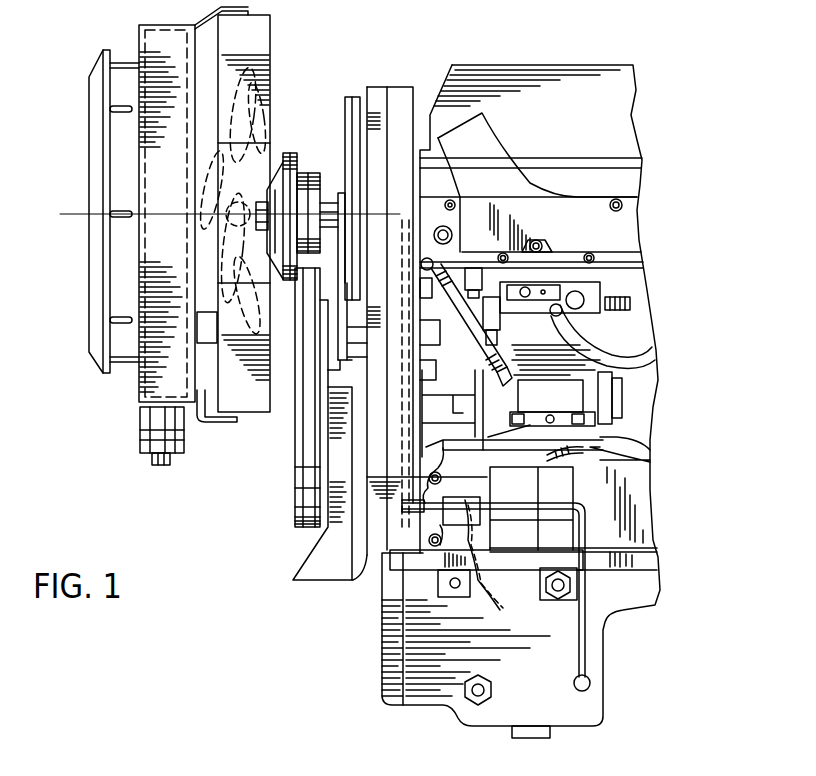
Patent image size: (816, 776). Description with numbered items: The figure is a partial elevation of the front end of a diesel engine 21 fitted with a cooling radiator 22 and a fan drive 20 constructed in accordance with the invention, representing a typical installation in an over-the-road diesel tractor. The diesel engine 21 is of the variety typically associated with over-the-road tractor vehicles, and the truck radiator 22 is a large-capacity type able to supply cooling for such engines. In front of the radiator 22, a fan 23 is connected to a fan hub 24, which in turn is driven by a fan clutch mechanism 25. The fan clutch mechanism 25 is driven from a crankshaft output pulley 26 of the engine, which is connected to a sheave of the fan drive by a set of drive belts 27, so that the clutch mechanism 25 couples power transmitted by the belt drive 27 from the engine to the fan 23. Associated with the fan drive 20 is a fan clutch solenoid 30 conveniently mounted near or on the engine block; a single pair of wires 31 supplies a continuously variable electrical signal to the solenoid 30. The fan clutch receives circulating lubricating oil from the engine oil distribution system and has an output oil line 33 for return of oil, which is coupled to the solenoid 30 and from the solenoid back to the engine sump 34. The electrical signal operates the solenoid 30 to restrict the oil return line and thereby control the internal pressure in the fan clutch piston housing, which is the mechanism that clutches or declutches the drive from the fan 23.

The fan drive 20 is at (323, 72).
The diesel engine 21 is at (600, 80).
The truck radiator 22 is at (140, 386).
The fan 23 is at (270, 57).
The fan hub 24 is at (270, 119).
The fan clutch mechanism 25 is at (300, 165).
The crankshaft output pulley 26 is at (295, 522).
The drive belts 27 is at (300, 446).
The fan clutch solenoid 30 is at (443, 515).
The pair of wires 31 is at (495, 605).
The output oil line 33 is at (434, 163).
The engine sump 34 is at (610, 624).